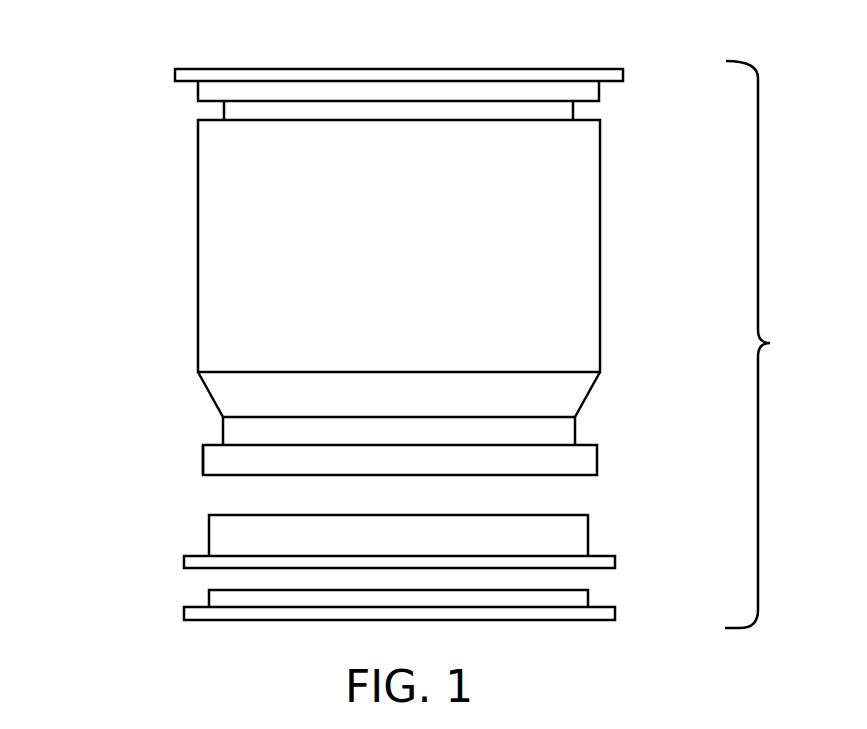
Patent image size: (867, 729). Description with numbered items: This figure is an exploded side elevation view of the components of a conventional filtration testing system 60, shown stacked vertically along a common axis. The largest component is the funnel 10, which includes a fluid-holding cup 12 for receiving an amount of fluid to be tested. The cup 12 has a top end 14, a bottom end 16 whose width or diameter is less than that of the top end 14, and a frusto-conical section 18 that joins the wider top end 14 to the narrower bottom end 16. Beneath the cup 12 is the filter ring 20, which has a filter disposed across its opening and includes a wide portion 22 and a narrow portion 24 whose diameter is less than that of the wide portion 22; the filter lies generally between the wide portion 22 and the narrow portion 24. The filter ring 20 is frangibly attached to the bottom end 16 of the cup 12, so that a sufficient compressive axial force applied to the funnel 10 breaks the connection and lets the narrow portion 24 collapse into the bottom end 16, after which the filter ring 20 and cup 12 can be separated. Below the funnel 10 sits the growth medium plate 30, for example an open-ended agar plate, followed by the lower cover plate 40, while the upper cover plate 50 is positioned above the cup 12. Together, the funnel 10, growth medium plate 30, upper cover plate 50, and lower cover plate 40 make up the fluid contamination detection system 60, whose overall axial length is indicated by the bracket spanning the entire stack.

The funnel 10 is at (135, 250).
The fluid-holding cup 12 is at (614, 210).
The top end 14 is at (200, 119).
The bottom end 16 is at (577, 417).
The frusto-conical section 18 is at (208, 397).
The filter ring 20 is at (612, 462).
The wide portion 22 is at (203, 462).
The narrow portion 24 is at (223, 432).
The growth medium plate 30 is at (590, 540).
The lower cover plate 40 is at (617, 612).
The upper cover plate 50 is at (635, 65).
The filtration testing system 60 is at (770, 343).